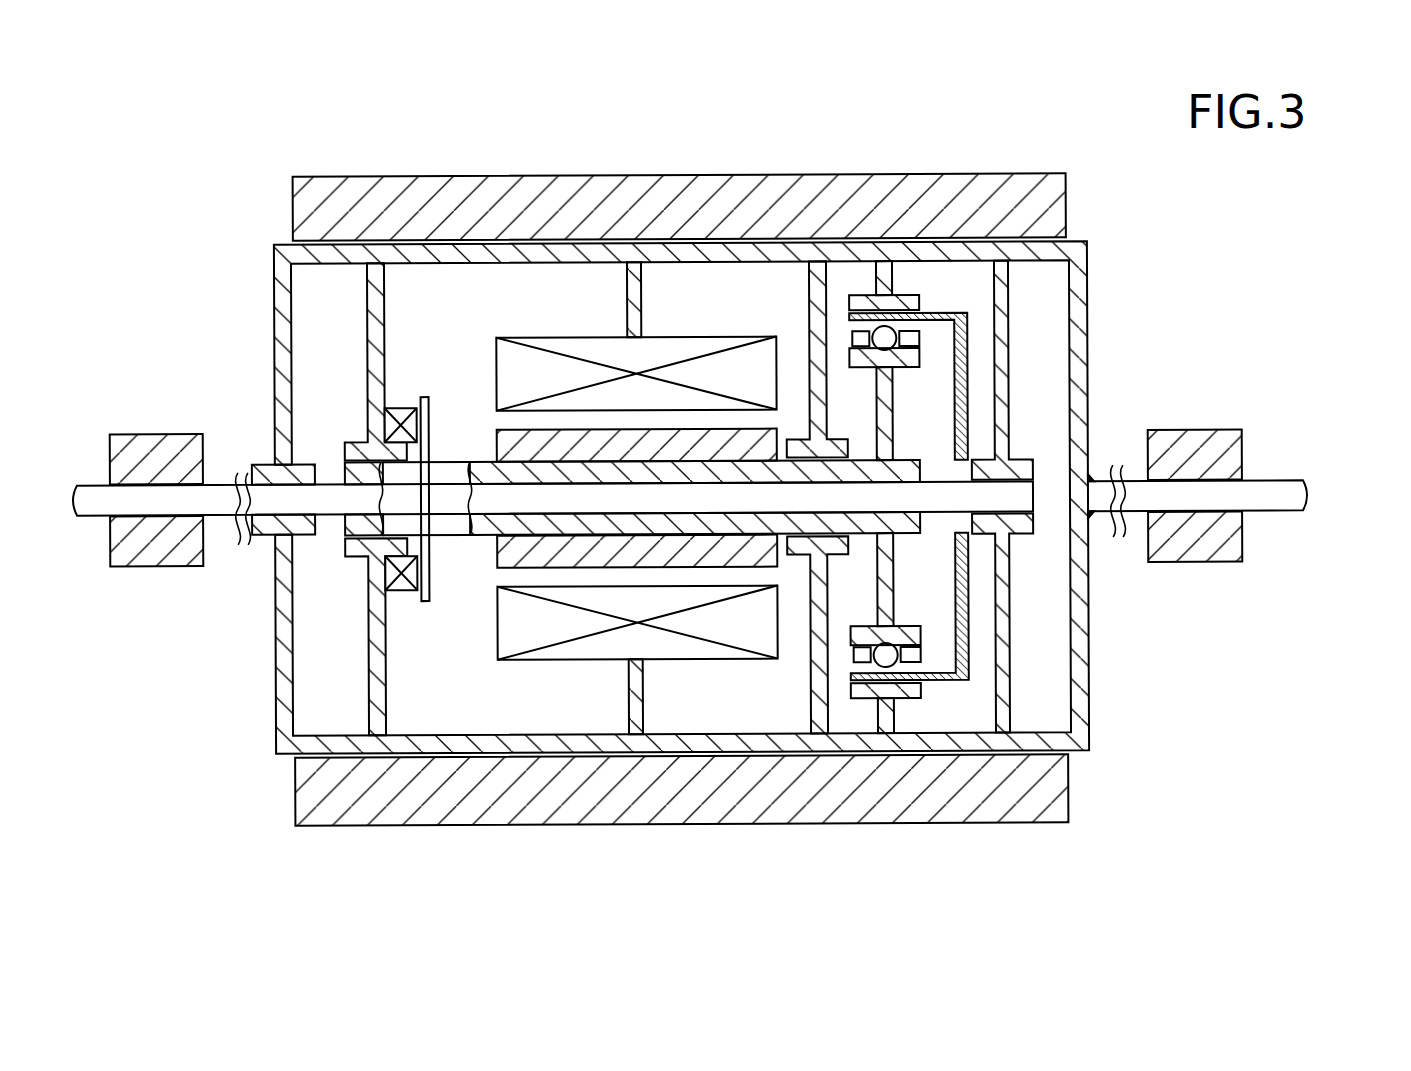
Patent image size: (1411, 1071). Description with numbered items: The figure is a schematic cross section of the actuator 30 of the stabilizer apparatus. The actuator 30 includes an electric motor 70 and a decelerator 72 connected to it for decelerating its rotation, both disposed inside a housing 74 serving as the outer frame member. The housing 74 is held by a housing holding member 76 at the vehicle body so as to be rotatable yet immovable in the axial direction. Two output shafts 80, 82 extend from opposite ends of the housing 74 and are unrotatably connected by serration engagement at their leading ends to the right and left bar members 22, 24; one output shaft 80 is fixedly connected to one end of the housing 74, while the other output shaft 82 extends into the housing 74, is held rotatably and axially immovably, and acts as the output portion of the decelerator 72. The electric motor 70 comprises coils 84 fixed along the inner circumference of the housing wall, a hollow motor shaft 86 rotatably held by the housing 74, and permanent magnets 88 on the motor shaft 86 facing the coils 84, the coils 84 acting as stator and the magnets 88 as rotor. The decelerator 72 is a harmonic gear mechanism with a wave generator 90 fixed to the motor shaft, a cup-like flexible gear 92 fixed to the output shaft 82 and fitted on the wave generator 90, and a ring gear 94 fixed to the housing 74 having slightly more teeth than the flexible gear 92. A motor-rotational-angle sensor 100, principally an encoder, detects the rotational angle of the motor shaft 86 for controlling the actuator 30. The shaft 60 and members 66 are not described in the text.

The actuator 30 is at (641, 138).
The shaft 60 is at (723, 488).
The wheel hub 66 is at (128, 548).
The electric motor 70 is at (710, 277).
The decelerator 72 is at (943, 262).
The housing 74 is at (333, 256).
The housing holding member 76 is at (398, 192).
The output shaft 80 is at (1102, 500).
The output shaft 82 is at (272, 507).
The coils 84 is at (586, 345).
The motor shaft 86 is at (480, 462).
The permanent magnets 88 is at (552, 442).
The wave generator 90 is at (887, 405).
The flexible gear 92 is at (970, 327).
The ring gear 94 is at (863, 300).
The motor-rotational-angle sensor 100 is at (403, 395).
The left bar member 24 is at (86, 462).
The right bar member 22 is at (1288, 540).